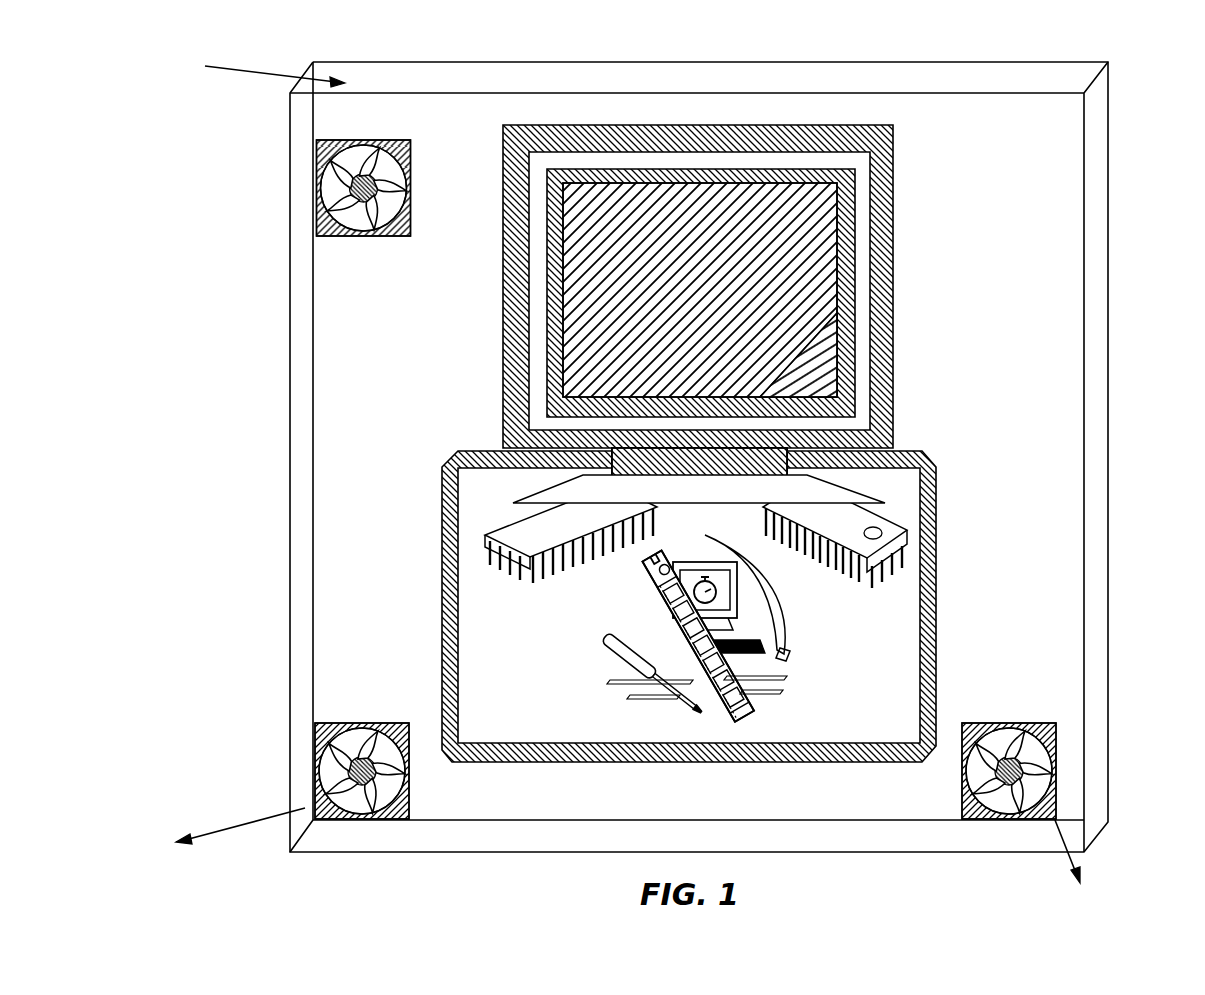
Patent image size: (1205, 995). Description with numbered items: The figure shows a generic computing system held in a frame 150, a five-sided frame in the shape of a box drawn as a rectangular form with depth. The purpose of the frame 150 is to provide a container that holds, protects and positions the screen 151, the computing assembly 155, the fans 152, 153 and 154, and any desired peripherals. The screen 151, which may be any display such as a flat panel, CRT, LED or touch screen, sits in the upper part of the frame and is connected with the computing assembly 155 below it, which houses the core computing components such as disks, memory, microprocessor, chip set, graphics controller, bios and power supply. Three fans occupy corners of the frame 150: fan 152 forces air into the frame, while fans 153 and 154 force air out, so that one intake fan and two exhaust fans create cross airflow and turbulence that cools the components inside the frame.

The frame 150 is at (1097, 160).
The screen 151 is at (862, 262).
The fan 152 is at (355, 140).
The fan 153 is at (355, 723).
The fan 154 is at (1000, 723).
The computing assembly 155 is at (907, 633).